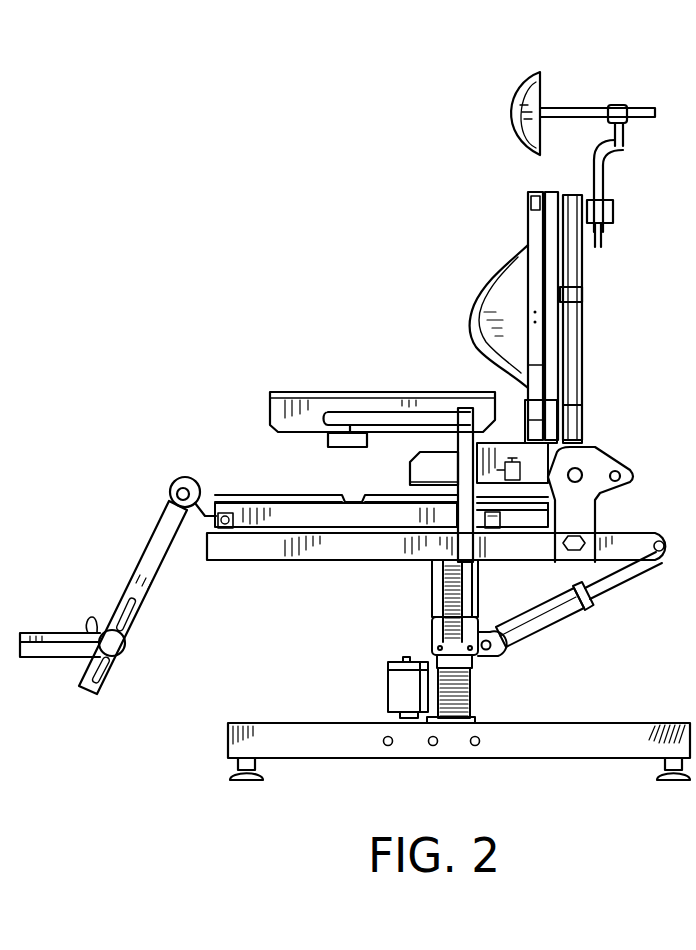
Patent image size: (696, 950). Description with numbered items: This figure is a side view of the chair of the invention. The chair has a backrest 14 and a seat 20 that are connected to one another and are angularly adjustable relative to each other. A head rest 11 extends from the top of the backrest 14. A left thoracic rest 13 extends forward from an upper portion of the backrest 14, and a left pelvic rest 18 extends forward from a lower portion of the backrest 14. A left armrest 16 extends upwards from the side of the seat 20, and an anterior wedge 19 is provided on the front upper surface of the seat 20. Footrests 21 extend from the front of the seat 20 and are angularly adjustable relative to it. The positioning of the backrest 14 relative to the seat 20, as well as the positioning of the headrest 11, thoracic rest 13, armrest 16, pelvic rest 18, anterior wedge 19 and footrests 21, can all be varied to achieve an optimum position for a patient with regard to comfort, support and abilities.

The head rest 11 is at (512, 100).
The left thoracic rest 13 is at (478, 298).
The backrest 14 is at (548, 207).
The left armrest 16 is at (307, 417).
The left pelvic rest 18 is at (443, 467).
The anterior wedge 19 is at (290, 497).
The seat 20 is at (273, 513).
The footrests 21 is at (147, 553).